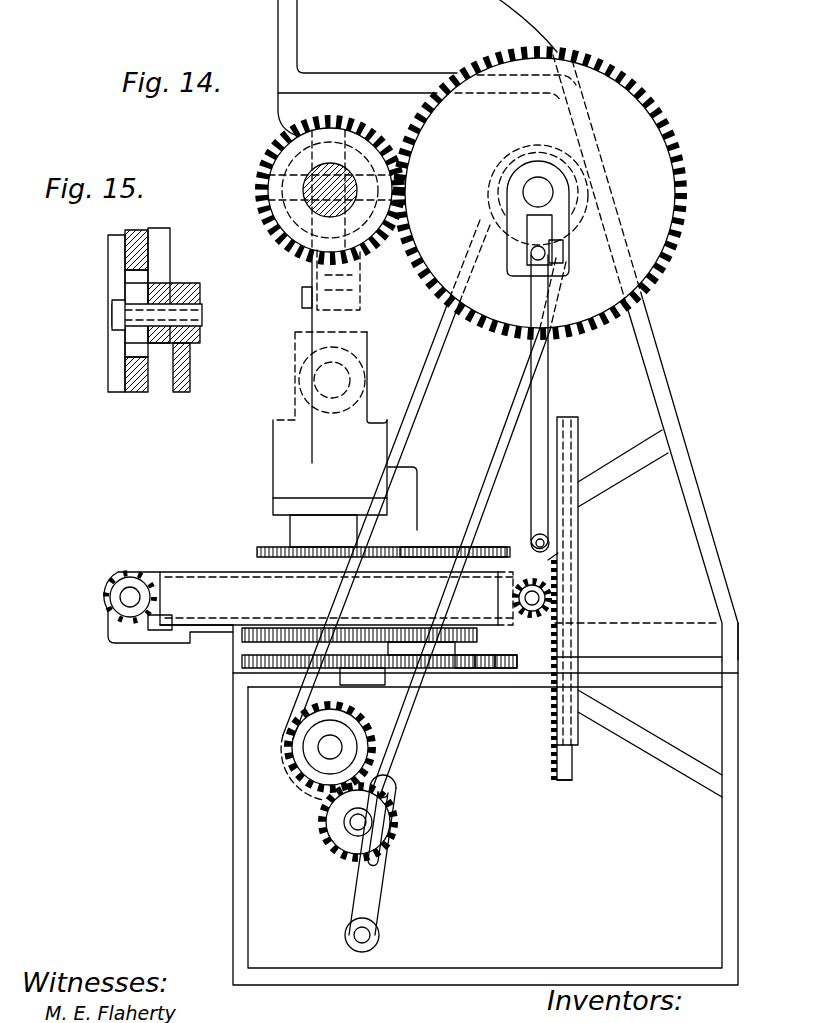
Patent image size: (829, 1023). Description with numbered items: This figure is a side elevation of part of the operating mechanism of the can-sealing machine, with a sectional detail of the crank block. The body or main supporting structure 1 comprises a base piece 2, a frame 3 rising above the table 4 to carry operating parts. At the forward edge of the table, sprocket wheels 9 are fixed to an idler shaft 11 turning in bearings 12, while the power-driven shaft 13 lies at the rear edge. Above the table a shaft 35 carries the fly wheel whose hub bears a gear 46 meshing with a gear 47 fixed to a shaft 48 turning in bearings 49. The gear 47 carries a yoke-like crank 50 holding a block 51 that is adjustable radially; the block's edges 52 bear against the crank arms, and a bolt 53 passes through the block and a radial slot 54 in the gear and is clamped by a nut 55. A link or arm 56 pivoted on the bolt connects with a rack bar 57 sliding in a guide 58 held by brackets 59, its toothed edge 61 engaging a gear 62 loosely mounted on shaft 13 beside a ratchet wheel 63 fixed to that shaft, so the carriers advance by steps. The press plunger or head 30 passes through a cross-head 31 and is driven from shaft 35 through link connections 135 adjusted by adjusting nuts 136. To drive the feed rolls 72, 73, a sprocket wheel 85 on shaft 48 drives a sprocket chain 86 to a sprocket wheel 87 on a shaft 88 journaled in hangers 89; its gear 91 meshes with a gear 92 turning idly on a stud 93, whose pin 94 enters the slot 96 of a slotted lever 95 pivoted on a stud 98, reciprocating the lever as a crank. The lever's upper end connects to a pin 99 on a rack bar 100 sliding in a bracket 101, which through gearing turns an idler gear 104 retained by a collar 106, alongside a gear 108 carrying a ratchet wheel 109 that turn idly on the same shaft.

In FIG. 14, the body or main supporting structure 1 is at (637, 357).
In FIG. 14, the base piece 2 is at (735, 861).
In FIG. 14, the frame 3 is at (683, 456).
In FIG. 14, the table 4 is at (195, 585).
In FIG. 14, the sprocket wheels 9 is at (143, 570).
In FIG. 14, the idler shaft 11 is at (118, 594).
In FIG. 14, the bearings 12 is at (128, 638).
In FIG. 14, the shaft 13 is at (549, 607).
In FIG. 14, the plunger or head 30 is at (290, 478).
In FIG. 14, the cross-head 31 is at (322, 434).
In FIG. 14, the shaft 35 is at (308, 205).
In FIG. 14, the gear 46 is at (276, 153).
In FIG. 14, the gear 47 is at (681, 159).
In FIG. 14, the shaft 48 is at (538, 178).
In FIG. 14, the bearings 49 is at (567, 167).
In FIG. 14, the crank 50 is at (514, 249).
In FIG. 15, the crank 50 is at (160, 244).
In FIG. 14, the block 51 is at (526, 264).
In FIG. 15, the block 51 is at (170, 288).
In FIG. 14, the edges 52 is at (558, 249).
In FIG. 15, the bolt 53 is at (140, 320).
In FIG. 15, the radial slot 54 is at (135, 281).
In FIG. 15, the nut 55 is at (118, 316).
In FIG. 14, the link or arm 56 is at (549, 368).
In FIG. 15, the link or arm 56 is at (190, 366).
In FIG. 14, the rack bar 57 is at (565, 782).
In FIG. 14, the guide 58 is at (573, 590).
In FIG. 14, the brackets 59 is at (616, 476).
In FIG. 14, the toothed edge 61 is at (556, 715).
In FIG. 14, the gear 62 is at (525, 568).
In FIG. 14, the ratchet wheel 63 is at (556, 568).
In FIG. 14, the feed roll 72 is at (262, 545).
In FIG. 14, the feed roll 73 is at (413, 538).
In FIG. 14, the sprocket wheel 85 is at (496, 168).
In FIG. 14, the sprocket chain 86 is at (432, 330).
In FIG. 14, the sprocket wheel 87 is at (290, 727).
In FIG. 14, the shaft 88 is at (325, 750).
In FIG. 14, the hangers 89 is at (396, 716).
In FIG. 14, the gear 91 is at (290, 748).
In FIG. 14, the gear 92 is at (345, 845).
In FIG. 14, the stud 93 is at (352, 822).
In FIG. 14, the pin 94 is at (386, 837).
In FIG. 14, the slotted lever 95 is at (372, 888).
In FIG. 14, the slot 96 is at (391, 800).
In FIG. 14, the stud 98 is at (370, 937).
In FIG. 14, the pin 99 is at (458, 670).
In FIG. 14, the rack bar 100 is at (498, 668).
In FIG. 14, the bracket 101 is at (490, 668).
In FIG. 14, the idler gear 104 is at (362, 672).
In FIG. 14, the collar 106 is at (403, 640).
In FIG. 14, the gear 108 is at (348, 660).
In FIG. 14, the ratchet wheel 109 is at (340, 655).
In FIG. 14, the link connections 135 is at (297, 330).
In FIG. 14, the adjusting nuts 136 is at (302, 298).